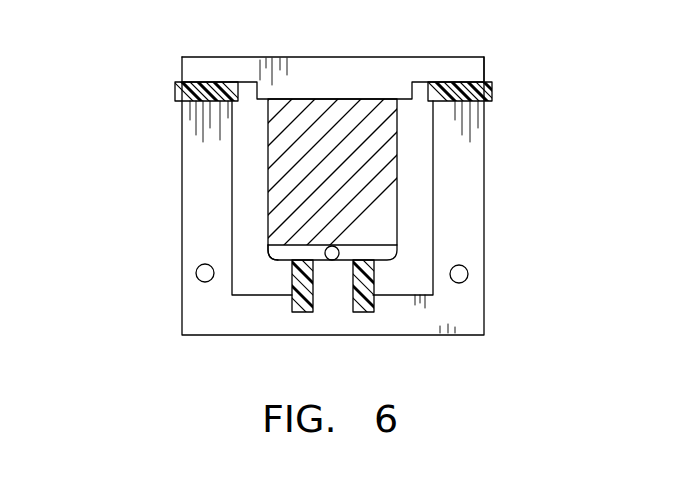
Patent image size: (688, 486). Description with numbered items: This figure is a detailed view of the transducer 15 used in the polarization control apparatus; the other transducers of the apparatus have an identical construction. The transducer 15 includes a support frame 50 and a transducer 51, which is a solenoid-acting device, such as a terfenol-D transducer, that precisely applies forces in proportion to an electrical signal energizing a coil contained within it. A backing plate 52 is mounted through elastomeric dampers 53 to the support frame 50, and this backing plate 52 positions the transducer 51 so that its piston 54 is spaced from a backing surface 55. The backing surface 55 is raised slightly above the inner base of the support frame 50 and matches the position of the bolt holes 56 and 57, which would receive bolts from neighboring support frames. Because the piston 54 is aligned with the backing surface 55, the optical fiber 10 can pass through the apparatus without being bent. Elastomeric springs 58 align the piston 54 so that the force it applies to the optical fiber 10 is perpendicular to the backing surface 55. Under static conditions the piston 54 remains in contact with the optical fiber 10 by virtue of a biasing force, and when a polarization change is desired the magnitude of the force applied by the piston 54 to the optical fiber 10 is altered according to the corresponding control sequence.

The optical fiber 10 is at (298, 254).
The transducer 15 is at (118, 218).
The support frame 50 is at (182, 128).
The transducer 51 is at (349, 146).
The backing plate 52 is at (300, 62).
The elastomeric dampers 53 is at (175, 90).
The piston 54 is at (386, 252).
The backing surface 55 is at (327, 262).
The bolt hole 56 is at (196, 273).
The bolt hole 57 is at (468, 274).
The elastomeric springs 58 is at (304, 314).